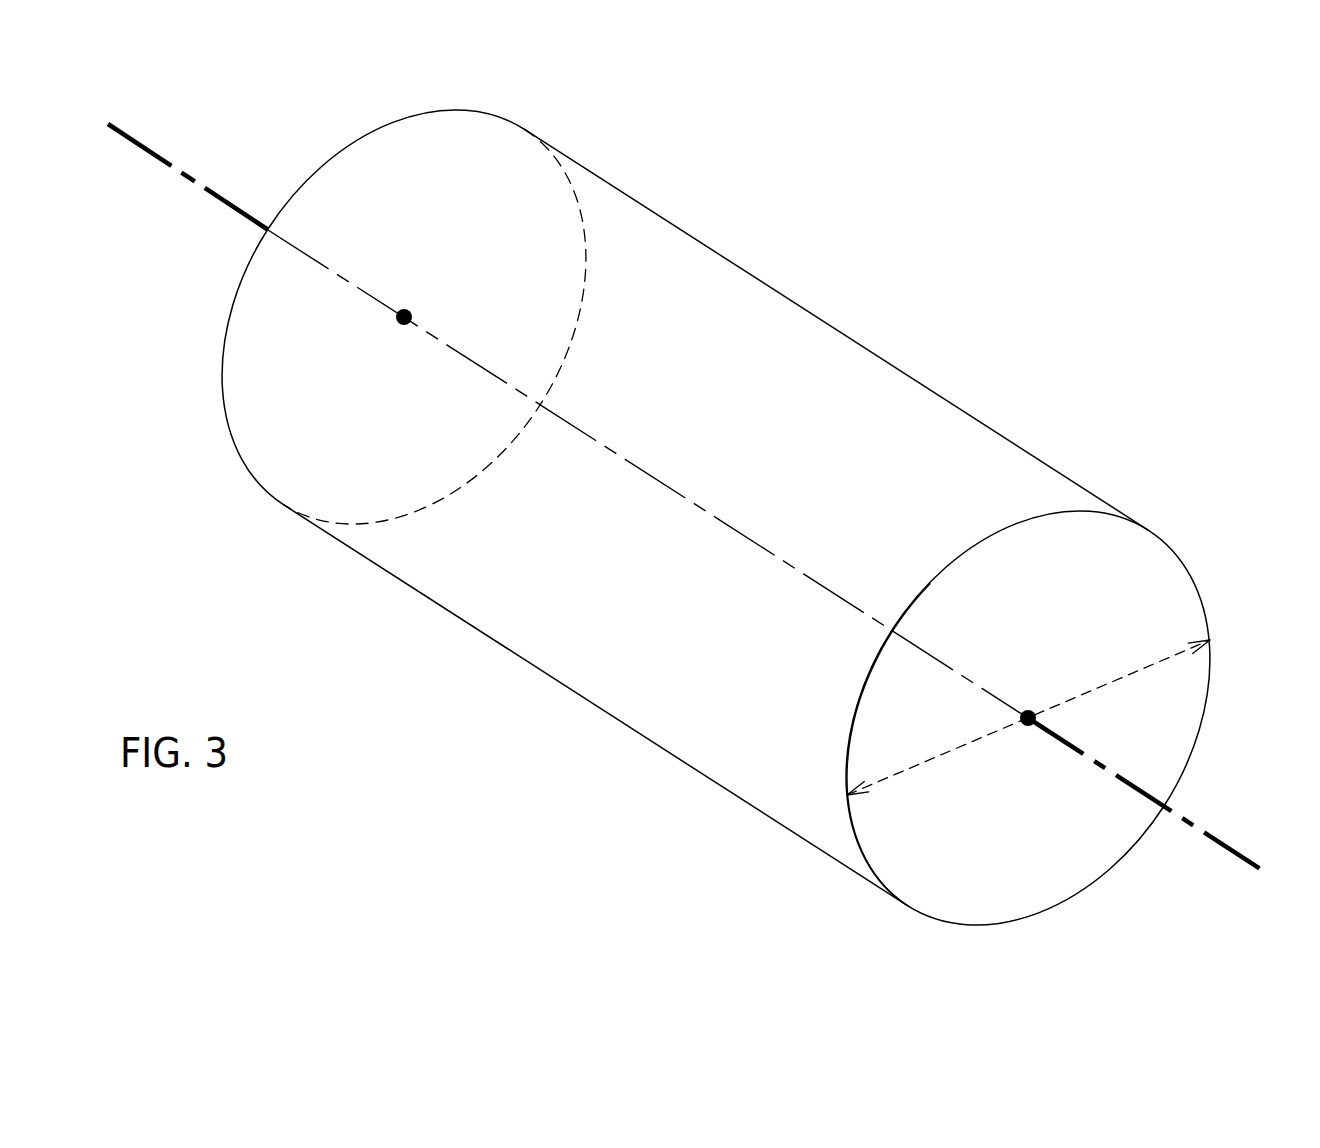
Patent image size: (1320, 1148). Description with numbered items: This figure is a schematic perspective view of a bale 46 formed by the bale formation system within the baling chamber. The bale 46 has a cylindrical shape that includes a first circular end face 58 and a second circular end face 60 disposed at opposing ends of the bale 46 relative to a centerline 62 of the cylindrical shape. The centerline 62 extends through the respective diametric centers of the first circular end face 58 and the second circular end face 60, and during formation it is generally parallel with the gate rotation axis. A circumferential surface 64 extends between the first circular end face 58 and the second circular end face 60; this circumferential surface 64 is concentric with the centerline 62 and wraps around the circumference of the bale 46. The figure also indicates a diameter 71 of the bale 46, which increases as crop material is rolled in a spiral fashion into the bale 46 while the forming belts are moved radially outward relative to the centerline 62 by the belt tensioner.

The bale 46 is at (906, 277).
The first circular end face 58 is at (1162, 706).
The second circular end face 60 is at (382, 212).
The centerline 62 is at (1230, 842).
The circumferential surface 64 is at (1110, 876).
The diameter 71 is at (1124, 674).